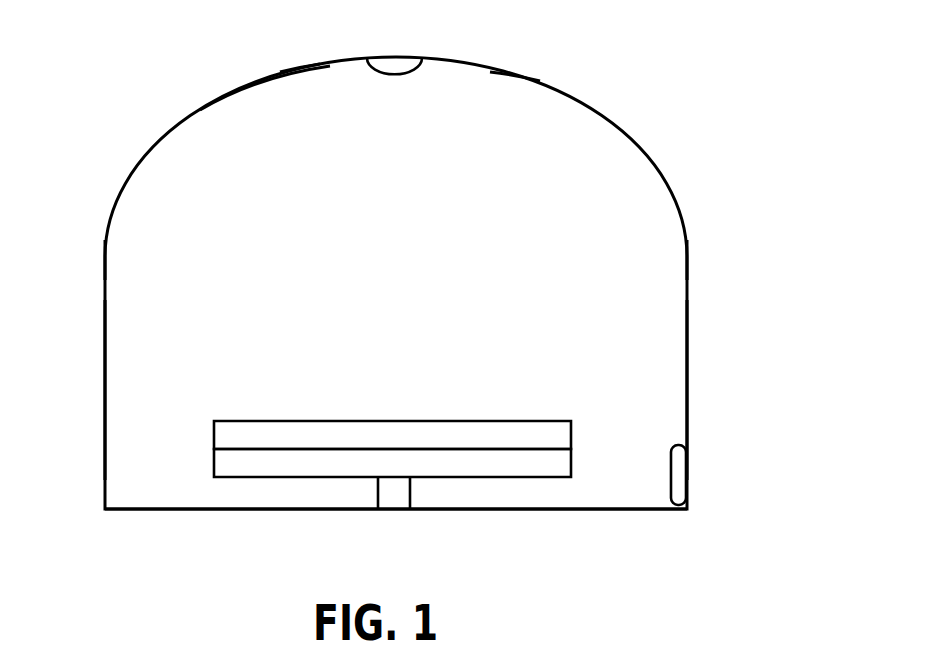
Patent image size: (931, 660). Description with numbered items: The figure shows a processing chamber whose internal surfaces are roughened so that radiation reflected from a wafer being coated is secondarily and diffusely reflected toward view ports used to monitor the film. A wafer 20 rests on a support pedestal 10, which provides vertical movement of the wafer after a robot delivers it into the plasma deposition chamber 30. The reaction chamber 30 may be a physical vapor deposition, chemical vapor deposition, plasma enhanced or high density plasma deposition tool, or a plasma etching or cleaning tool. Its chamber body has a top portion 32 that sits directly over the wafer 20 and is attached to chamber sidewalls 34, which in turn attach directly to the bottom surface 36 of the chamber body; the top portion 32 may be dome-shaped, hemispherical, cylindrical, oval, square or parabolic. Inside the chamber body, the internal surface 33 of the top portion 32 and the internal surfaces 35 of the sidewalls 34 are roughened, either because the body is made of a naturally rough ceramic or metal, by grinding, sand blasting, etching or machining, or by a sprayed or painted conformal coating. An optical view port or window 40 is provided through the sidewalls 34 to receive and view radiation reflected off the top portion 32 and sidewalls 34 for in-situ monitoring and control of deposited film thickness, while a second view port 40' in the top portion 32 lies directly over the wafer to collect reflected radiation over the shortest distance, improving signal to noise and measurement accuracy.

The support pedestal 10 is at (252, 464).
The wafer 20 is at (260, 433).
The plasma deposition chamber 30 is at (597, 100).
The top portion 32 is at (264, 79).
The internal surface of top portion 33 is at (303, 68).
The chamber sidewalls 34 is at (105, 380).
The internal surfaces of chamber sidewalls 35 is at (106, 262).
The bottom wall 36 is at (455, 511).
The optical view port 40 is at (739, 465).
The view port at top portion 40' is at (448, 39).